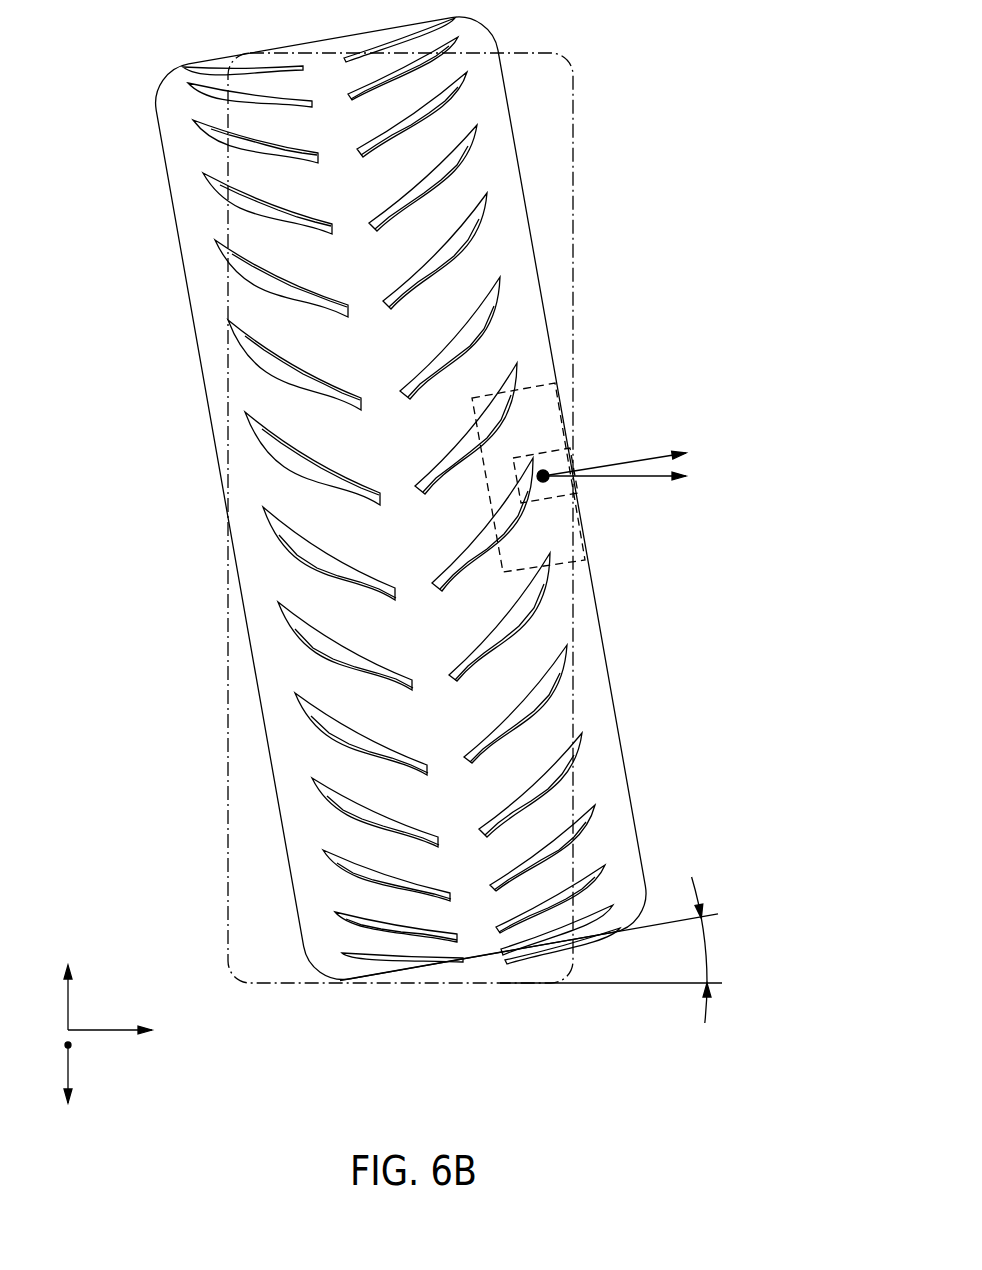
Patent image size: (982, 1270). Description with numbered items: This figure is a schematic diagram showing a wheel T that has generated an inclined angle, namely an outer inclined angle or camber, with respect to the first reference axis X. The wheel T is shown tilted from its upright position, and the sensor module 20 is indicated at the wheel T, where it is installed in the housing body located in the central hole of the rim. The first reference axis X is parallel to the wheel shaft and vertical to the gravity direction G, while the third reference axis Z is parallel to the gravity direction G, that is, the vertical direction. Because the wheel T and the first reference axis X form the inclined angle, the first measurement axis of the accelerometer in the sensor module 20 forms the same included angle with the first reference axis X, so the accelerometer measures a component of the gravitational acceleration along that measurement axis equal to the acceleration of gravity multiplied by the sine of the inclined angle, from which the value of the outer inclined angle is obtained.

The wheel T is at (522, 258).
The sensor module 20 is at (553, 458).
The first reference axis X is at (123, 1030).
The third reference axis Z is at (69, 981).
The gravity direction G is at (67, 1095).